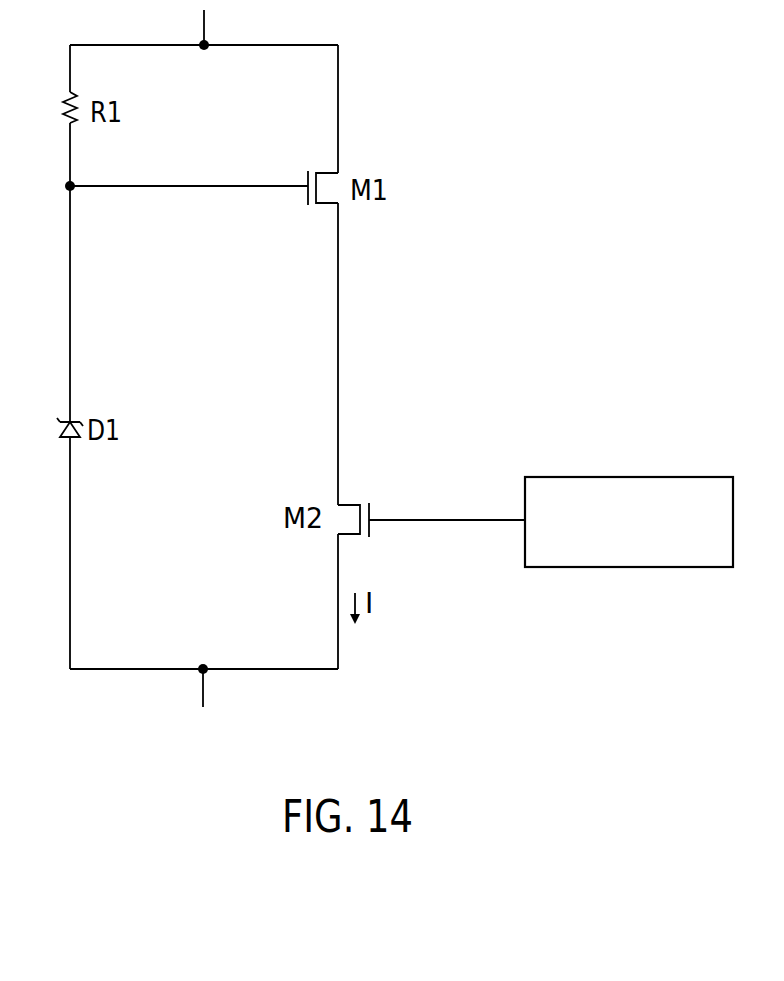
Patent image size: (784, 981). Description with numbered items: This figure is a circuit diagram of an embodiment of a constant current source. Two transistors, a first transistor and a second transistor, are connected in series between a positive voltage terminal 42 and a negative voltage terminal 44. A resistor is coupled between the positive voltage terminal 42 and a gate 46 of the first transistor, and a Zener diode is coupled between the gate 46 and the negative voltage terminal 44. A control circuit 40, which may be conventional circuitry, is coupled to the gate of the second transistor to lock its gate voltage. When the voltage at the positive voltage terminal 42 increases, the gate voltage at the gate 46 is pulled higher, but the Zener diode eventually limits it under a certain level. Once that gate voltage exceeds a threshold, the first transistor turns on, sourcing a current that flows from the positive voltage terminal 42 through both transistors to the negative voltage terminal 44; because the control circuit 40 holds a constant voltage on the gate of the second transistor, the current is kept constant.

The control circuit 40 is at (625, 477).
The positive voltage terminal 42 is at (204, 50).
The negative voltage terminal 44 is at (203, 665).
The gate of the transistor M1 46 is at (276, 190).